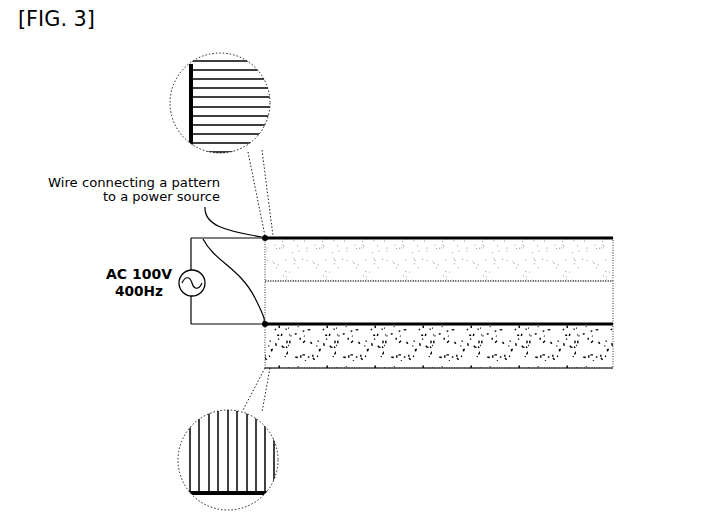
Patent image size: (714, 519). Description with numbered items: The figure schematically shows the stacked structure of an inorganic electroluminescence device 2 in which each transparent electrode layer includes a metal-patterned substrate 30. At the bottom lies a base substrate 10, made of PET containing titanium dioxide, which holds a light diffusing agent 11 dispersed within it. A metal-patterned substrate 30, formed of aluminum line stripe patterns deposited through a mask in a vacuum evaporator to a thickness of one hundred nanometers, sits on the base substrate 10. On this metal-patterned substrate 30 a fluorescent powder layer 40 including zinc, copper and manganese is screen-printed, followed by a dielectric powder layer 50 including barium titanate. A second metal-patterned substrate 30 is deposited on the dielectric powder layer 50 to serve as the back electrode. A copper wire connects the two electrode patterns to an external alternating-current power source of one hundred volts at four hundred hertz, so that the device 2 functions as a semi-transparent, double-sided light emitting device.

The inorganic electroluminescence device 2 is at (476, 283).
The base substrate 10 is at (476, 372).
The light diffusing agent 11 is at (543, 360).
The metal-patterned substrate 30 is at (567, 323).
The fluorescent powder layer 40 is at (614, 300).
The dielectric powder layer 50 is at (614, 259).